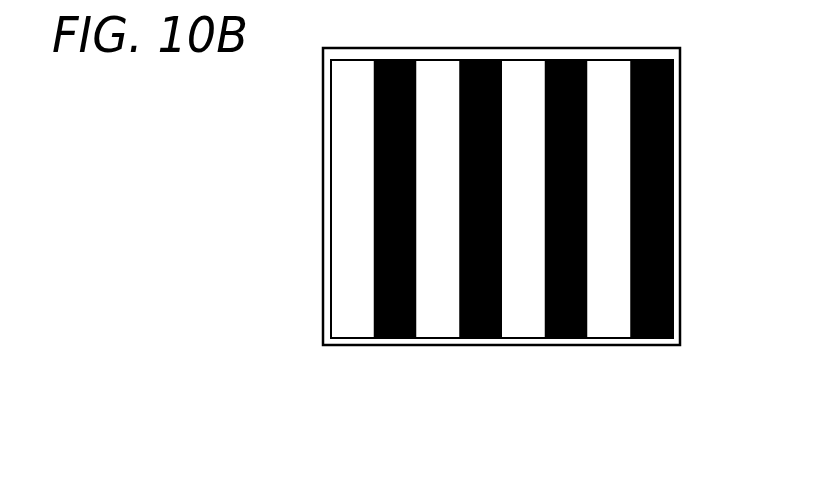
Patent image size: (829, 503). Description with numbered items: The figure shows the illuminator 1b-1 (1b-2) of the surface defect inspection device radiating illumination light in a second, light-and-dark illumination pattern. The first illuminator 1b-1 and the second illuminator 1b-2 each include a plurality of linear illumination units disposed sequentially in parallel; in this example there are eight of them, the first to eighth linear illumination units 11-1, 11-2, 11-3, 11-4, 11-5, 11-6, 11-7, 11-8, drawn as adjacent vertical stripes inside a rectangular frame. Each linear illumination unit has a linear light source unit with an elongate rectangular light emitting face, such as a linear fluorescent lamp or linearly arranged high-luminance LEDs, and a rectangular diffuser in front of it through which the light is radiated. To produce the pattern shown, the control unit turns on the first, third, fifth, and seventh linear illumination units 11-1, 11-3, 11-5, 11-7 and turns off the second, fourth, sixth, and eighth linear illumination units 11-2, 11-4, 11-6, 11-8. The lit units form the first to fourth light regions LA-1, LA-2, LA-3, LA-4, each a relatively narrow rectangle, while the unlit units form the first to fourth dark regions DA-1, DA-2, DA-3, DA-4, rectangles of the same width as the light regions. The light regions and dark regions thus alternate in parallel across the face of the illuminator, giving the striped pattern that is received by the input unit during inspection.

The first illuminator 1b-1 is at (562, 48).
The second illuminator 1b-2 is at (502, 199).
The first linear illumination unit 11-1 is at (350, 328).
The second linear illumination unit 11-2 is at (393, 328).
The third linear illumination unit 11-3 is at (438, 328).
The fourth linear illumination unit 11-4 is at (480, 328).
The fifth linear illumination unit 11-5 is at (523, 328).
The sixth linear illumination unit 11-6 is at (567, 328).
The seventh linear illumination unit 11-7 is at (608, 328).
The eighth linear illumination unit 11-8 is at (652, 328).
The first light region LA-1 is at (348, 246).
The second light region LA-2 is at (433, 246).
The third light region LA-3 is at (519, 246).
The fourth light region LA-4 is at (607, 246).
The first dark region DA-1 is at (393, 274).
The second dark region DA-2 is at (475, 274).
The third dark region DA-3 is at (560, 274).
The fourth dark region DA-4 is at (648, 274).